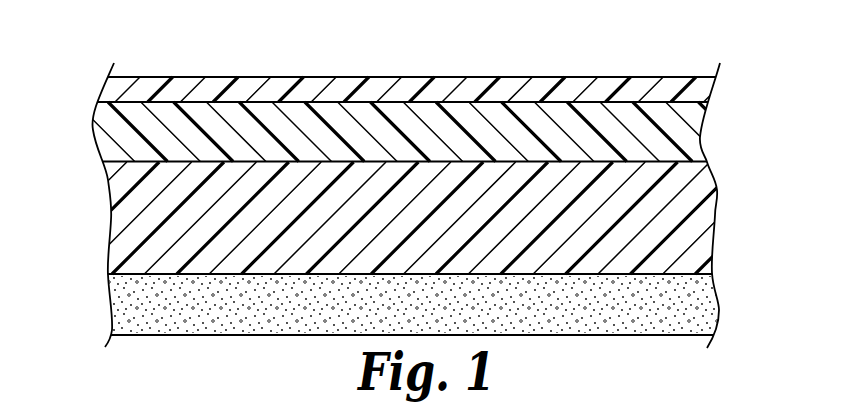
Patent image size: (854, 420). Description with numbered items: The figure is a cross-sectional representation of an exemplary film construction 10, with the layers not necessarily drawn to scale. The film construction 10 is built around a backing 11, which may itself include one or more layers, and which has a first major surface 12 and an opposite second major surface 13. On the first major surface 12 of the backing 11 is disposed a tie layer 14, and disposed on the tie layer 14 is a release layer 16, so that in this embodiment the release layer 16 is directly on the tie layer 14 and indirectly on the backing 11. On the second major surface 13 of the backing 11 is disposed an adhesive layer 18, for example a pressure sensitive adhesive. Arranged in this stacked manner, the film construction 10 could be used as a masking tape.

The film construction 10 is at (164, 48).
The backing 11 is at (120, 218).
The first major surface 12 is at (672, 154).
The second major surface 13 is at (678, 276).
The tie layer 14 is at (105, 142).
The release layer 16 is at (118, 92).
The adhesive layer 18 is at (125, 312).